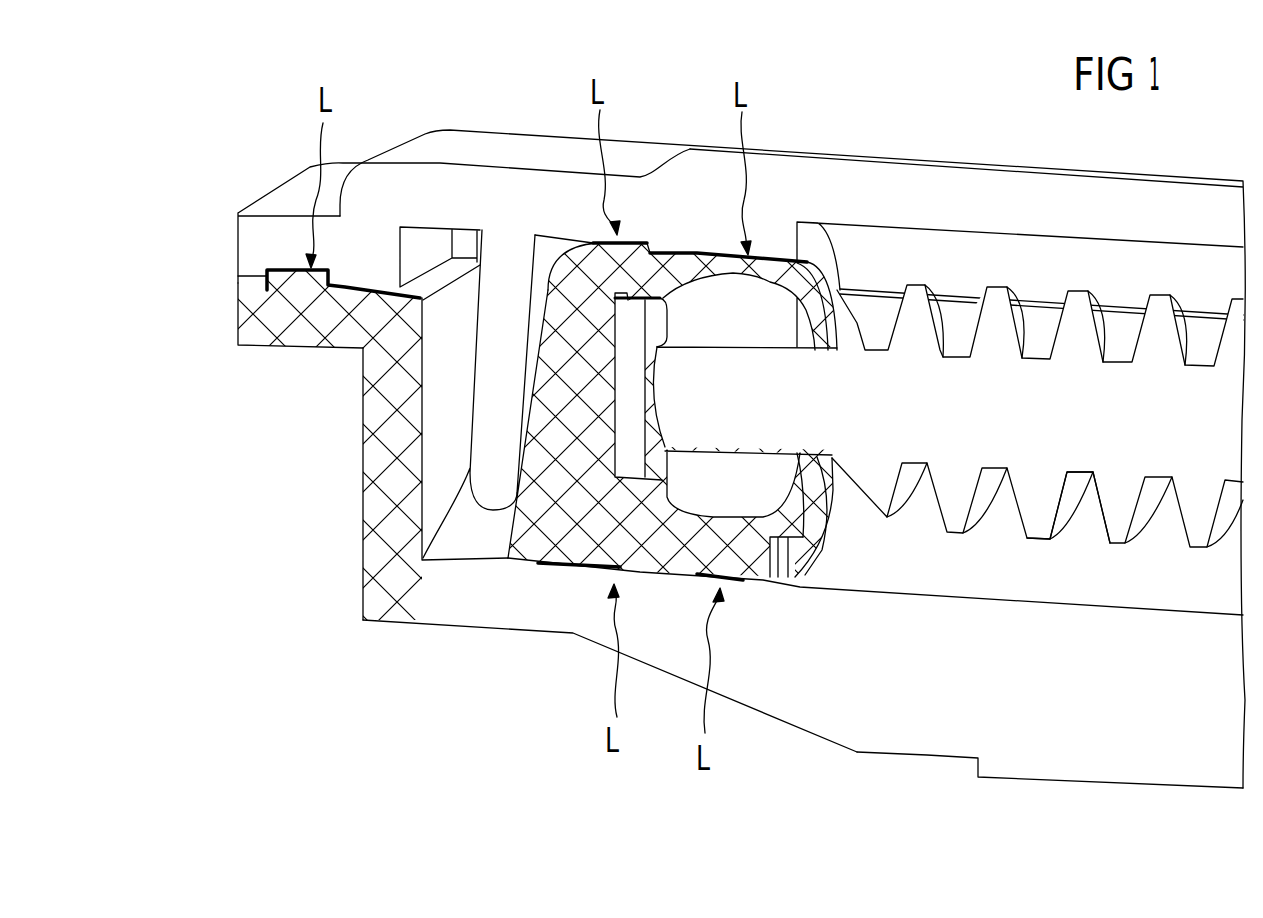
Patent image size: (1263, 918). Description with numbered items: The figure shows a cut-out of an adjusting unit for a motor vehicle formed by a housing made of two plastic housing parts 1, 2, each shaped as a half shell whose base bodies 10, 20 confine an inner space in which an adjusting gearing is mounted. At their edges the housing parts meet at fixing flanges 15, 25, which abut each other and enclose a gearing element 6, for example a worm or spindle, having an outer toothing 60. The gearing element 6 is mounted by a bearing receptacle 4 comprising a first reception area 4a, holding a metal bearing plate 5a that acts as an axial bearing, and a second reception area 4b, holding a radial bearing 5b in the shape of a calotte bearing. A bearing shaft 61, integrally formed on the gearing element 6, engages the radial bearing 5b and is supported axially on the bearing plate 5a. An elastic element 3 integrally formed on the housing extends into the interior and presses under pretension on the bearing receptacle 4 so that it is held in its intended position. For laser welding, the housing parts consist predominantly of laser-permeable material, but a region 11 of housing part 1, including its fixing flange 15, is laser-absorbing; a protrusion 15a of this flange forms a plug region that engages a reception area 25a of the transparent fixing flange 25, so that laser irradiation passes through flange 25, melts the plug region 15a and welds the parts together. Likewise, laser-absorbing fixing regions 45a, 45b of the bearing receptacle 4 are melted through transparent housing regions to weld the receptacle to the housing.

The housing part 1 is at (927, 755).
The housing part 2 is at (898, 157).
The elastic element 3 is at (480, 492).
The bearing receptacle 4 is at (523, 547).
The first reception area 4a is at (568, 263).
The second reception area 4b is at (773, 280).
The bearing plate 5a is at (633, 313).
The radial bearing 5b is at (712, 292).
The gearing element 6 is at (1053, 437).
The base body 10 is at (580, 612).
The region 11 is at (363, 497).
The fixing flange 15 is at (313, 338).
The protrusion 15a is at (278, 290).
The base body 20 is at (770, 170).
The fixing flange 25 is at (275, 228).
The reception area 25a is at (275, 267).
The fixing region 45a is at (558, 575).
The fixing region 45b is at (747, 590).
The outer toothing 60 is at (1115, 530).
The bearing shaft 61 is at (750, 428).